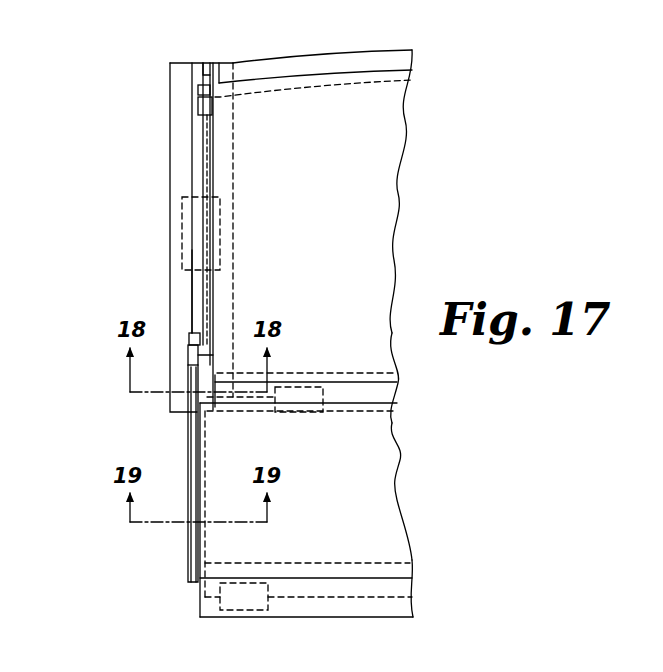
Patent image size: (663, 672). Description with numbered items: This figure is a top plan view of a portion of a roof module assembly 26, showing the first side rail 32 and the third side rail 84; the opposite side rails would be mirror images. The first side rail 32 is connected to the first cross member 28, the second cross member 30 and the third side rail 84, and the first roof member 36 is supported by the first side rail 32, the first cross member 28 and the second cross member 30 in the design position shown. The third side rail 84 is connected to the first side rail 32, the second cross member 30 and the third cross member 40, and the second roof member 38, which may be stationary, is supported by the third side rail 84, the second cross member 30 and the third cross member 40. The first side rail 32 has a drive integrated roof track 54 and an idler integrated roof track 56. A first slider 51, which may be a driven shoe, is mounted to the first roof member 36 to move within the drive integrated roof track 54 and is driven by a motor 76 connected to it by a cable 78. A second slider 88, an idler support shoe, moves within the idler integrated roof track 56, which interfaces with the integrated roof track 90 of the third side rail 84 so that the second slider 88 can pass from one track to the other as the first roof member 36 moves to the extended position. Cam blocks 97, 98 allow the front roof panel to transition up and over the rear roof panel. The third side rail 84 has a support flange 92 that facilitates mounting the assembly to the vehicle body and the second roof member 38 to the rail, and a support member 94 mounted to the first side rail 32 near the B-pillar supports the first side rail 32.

The roof module assembly 26 is at (84, 263).
The first cross member 28 is at (398, 60).
The second cross member 30 is at (383, 392).
The first side rail 32 is at (180, 154).
The first roof member 36 is at (383, 218).
The second roof member 38 is at (365, 493).
The third cross member 40 is at (400, 607).
The first slider 51 is at (205, 107).
The drive integrated roof track 54 is at (207, 73).
The idler integrated roof track 56 is at (197, 305).
The motor 76 is at (300, 413).
The cable 78 is at (198, 533).
The third side rail 84 is at (185, 468).
The second slider 88 is at (198, 357).
The integrated roof track 90 is at (197, 397).
The support flange 92 is at (190, 555).
The support member 94 is at (178, 235).
The cam block 97 is at (202, 92).
The cam block 98 is at (197, 340).